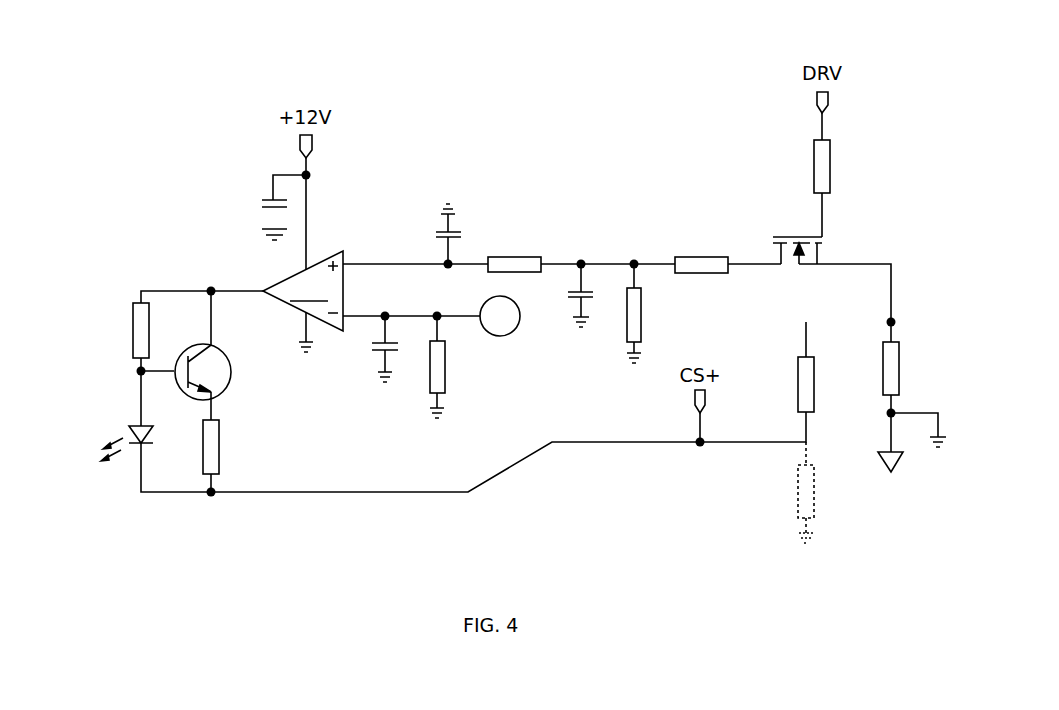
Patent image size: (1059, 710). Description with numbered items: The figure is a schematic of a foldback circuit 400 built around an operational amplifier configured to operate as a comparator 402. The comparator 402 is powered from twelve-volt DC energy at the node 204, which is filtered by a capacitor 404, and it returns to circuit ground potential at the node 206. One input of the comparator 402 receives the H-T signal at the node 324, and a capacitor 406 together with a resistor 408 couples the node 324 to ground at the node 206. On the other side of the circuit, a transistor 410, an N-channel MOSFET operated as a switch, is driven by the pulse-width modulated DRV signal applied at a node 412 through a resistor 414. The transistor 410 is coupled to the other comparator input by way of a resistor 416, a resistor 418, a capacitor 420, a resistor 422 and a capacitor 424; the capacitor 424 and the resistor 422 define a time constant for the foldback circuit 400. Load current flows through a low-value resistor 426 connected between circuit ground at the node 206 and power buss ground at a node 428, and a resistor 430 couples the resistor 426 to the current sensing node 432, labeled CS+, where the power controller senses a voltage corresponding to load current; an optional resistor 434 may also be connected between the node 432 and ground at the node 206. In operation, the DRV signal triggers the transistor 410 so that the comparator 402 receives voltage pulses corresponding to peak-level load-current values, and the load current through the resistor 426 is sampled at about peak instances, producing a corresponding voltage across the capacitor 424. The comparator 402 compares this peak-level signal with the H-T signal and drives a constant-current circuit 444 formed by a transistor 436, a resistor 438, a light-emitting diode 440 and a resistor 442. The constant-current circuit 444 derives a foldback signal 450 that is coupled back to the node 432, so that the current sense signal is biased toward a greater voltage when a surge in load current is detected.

The foldback circuit 400 is at (639, 34).
The comparator 402 is at (303, 291).
The capacitor 404 is at (270, 198).
The capacitor 406 is at (374, 350).
The resistor 408 is at (446, 387).
The transistor 410 is at (786, 237).
The node 412 is at (817, 103).
The resistor 414 is at (813, 160).
The resistor 416 is at (712, 257).
The resistor 418 is at (641, 297).
The capacitor 420 is at (592, 290).
The resistor 422 is at (530, 256).
The capacitor 424 is at (445, 229).
The resistor 426 is at (900, 352).
The node 428 is at (885, 462).
The resistor 430 is at (798, 368).
The current sensing node 432 is at (695, 404).
The resistor 434 is at (798, 478).
The transistor 436 is at (232, 371).
The resistor 438 is at (132, 333).
The light-emitting diode 440 is at (132, 447).
The resistor 442 is at (219, 432).
The constant-current circuit 444 is at (157, 269).
The foldback signal 450 is at (301, 483).
The node 204 is at (313, 141).
The node 206 is at (385, 383).
The node 324 is at (483, 302).